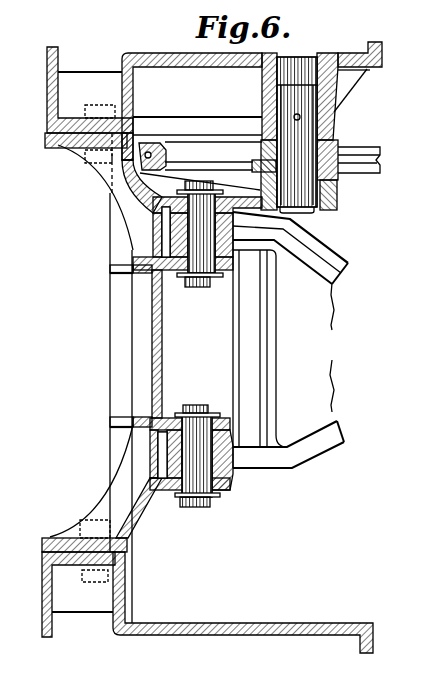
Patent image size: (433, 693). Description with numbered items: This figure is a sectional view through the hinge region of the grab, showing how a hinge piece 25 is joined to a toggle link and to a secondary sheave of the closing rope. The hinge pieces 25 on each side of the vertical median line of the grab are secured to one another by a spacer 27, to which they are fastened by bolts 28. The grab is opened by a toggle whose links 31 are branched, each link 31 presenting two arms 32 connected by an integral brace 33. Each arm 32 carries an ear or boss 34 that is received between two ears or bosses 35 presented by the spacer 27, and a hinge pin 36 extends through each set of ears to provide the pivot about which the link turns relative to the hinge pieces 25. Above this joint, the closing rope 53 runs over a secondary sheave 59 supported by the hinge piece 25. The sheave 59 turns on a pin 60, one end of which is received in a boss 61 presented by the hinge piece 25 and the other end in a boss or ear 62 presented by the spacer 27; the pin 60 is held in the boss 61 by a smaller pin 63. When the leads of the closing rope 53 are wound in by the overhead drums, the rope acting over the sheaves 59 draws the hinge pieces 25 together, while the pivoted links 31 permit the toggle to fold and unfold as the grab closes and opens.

The hinge piece 25 is at (150, 50).
The spacer 27 is at (58, 146).
The bolt 28 is at (100, 165).
The link 31 is at (332, 347).
The arm 32 is at (293, 237).
The brace 33 is at (262, 333).
The ear or boss 34 is at (156, 222).
The ear or boss 35 is at (236, 216).
The hinge pin 36 is at (200, 289).
The closing rope 53 is at (150, 152).
The secondary sheave 59 is at (358, 148).
The pin 60 is at (297, 90).
The boss 61 is at (337, 124).
The boss or ear 62 is at (348, 192).
The pin 63 is at (296, 116).